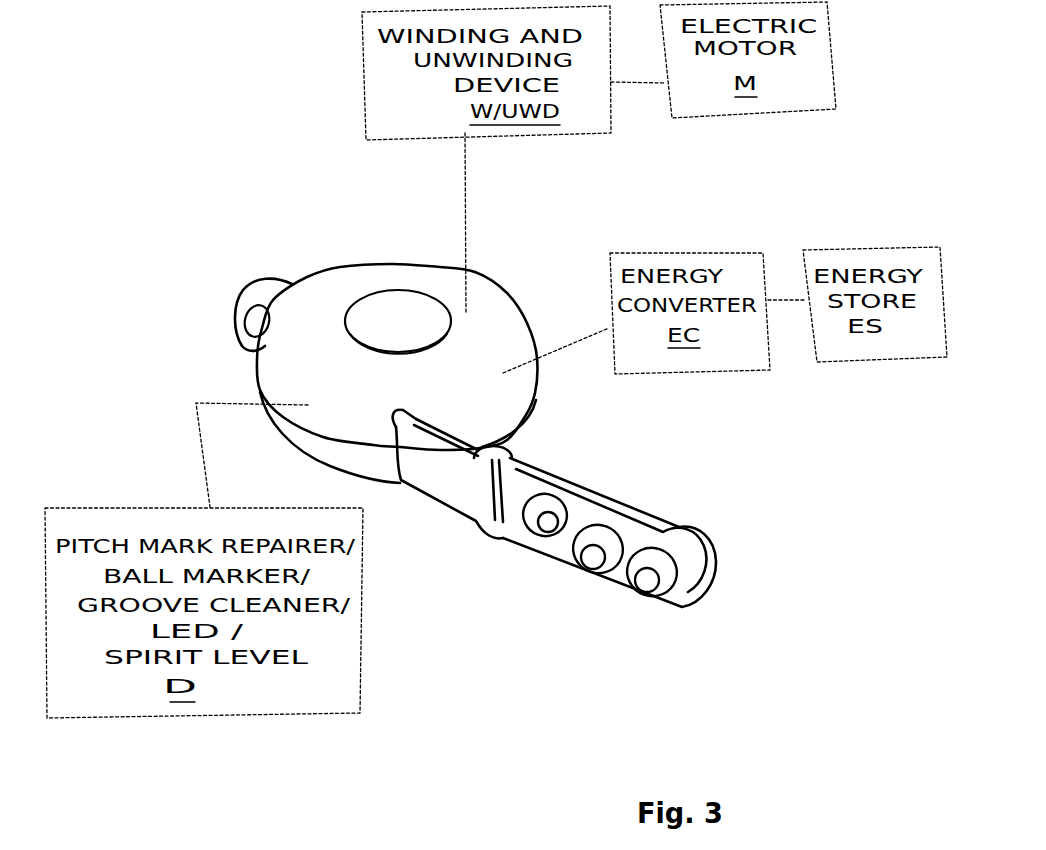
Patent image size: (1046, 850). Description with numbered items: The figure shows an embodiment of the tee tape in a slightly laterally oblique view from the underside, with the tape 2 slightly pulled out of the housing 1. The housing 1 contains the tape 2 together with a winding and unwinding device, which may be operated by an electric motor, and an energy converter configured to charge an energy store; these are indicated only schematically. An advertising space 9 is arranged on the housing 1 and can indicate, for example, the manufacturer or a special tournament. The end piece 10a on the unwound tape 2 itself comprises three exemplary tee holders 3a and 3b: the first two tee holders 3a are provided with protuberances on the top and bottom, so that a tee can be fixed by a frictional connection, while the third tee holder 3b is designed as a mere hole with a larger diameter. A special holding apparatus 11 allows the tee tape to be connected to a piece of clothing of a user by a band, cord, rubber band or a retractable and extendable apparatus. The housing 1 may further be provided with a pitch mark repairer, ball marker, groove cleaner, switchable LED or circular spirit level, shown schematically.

The housing 1 is at (538, 274).
The tape 2 is at (440, 468).
The tee holders 3a is at (590, 575).
The tee holder 3b is at (543, 518).
The advertising space 9 is at (330, 302).
The end piece 10a is at (672, 548).
The holding apparatus 11 is at (263, 288).